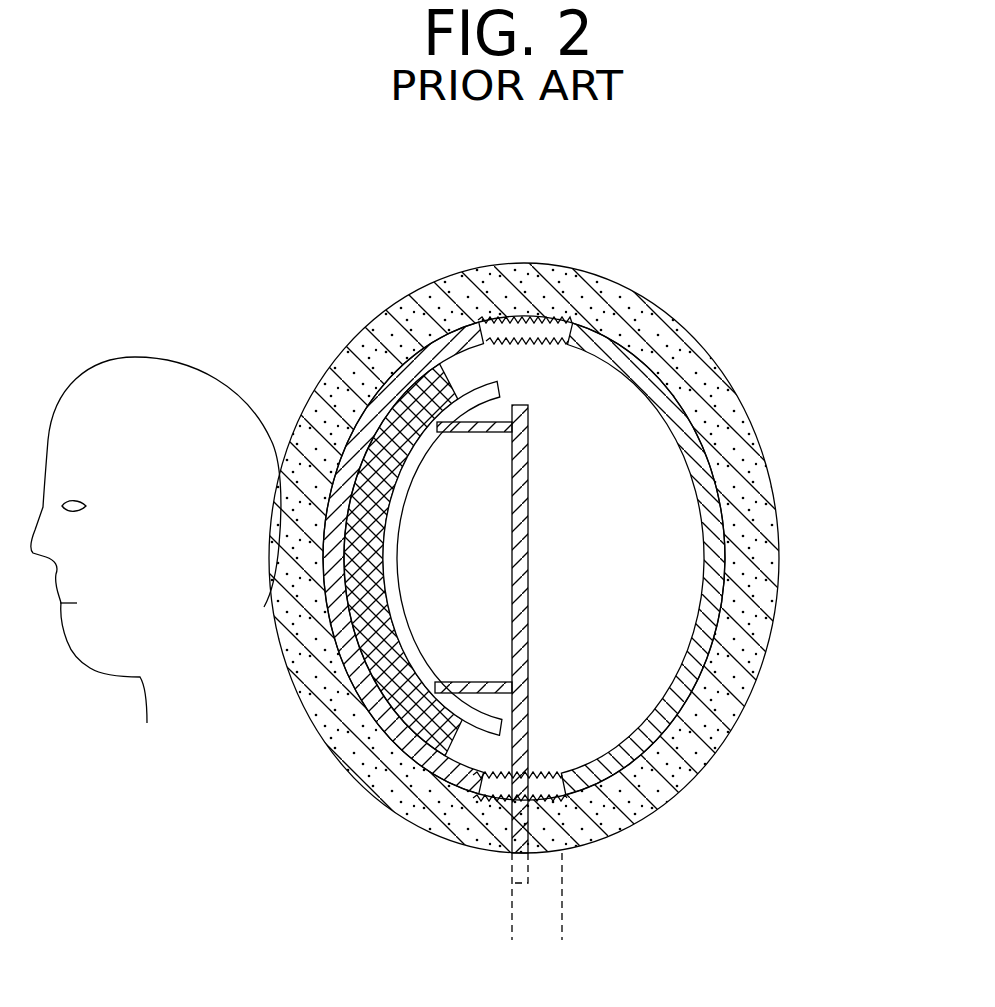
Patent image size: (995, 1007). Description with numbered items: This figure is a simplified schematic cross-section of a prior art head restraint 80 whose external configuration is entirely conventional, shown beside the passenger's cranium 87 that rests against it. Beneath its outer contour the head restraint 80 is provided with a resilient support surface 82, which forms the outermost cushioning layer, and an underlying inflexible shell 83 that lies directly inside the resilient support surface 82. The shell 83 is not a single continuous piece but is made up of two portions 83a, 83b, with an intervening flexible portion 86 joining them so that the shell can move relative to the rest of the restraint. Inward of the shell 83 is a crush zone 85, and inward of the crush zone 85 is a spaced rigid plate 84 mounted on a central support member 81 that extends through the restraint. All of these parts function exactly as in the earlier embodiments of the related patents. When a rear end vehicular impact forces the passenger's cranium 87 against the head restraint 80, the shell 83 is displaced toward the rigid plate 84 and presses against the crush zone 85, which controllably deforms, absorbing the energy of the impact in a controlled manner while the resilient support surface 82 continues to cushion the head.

The head restraint 80 is at (541, 573).
The driver baffle plate 81 is at (498, 672).
The resilient support surface 82 is at (320, 597).
The inflexible shell 83 is at (495, 547).
The shell portion 83a is at (393, 383).
The shell portion 83b is at (647, 350).
The rigid plate 84 is at (395, 708).
The crush zone 85 is at (370, 675).
The flexible portion 86 is at (547, 291).
The passenger's cranium 87 is at (160, 407).